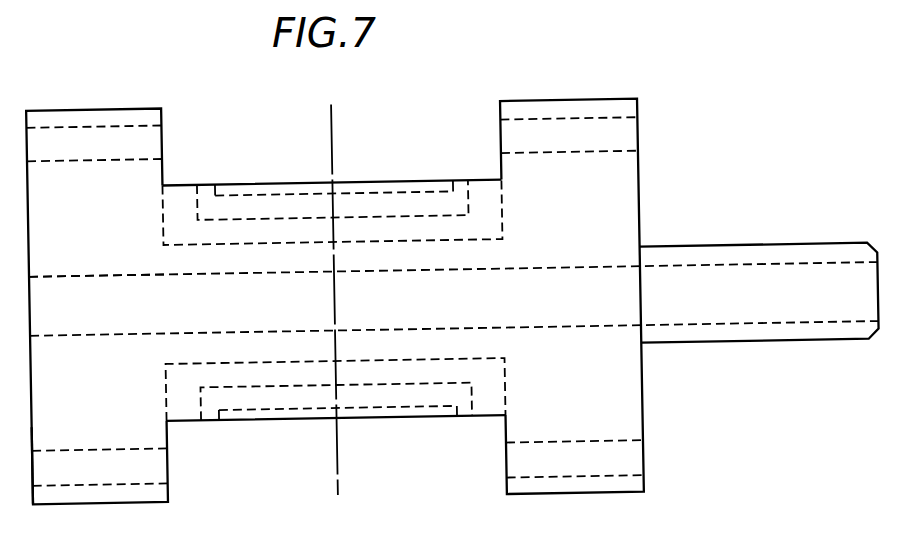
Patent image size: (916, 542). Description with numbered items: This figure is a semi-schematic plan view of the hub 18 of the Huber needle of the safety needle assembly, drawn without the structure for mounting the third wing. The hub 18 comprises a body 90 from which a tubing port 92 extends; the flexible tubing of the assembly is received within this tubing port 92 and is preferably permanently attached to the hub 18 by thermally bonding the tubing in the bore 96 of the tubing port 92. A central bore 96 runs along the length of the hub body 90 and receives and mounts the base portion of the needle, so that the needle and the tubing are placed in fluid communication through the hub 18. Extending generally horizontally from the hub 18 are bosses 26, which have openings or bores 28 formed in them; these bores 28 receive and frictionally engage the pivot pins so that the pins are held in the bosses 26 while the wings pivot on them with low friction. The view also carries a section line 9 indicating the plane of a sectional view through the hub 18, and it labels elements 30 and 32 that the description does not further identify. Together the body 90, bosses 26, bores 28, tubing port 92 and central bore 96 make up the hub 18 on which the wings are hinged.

The hub 18 is at (432, 74).
The bosses 26 is at (63, 110).
The bores 28 is at (145, 160).
The hub body 90 is at (235, 419).
The tubing port 92 is at (706, 340).
The central bore 96 is at (787, 263).
The passage 30 is at (82, 257).
The end portion 32 is at (16, 465).
The section line 9- 9 is at (335, 104).